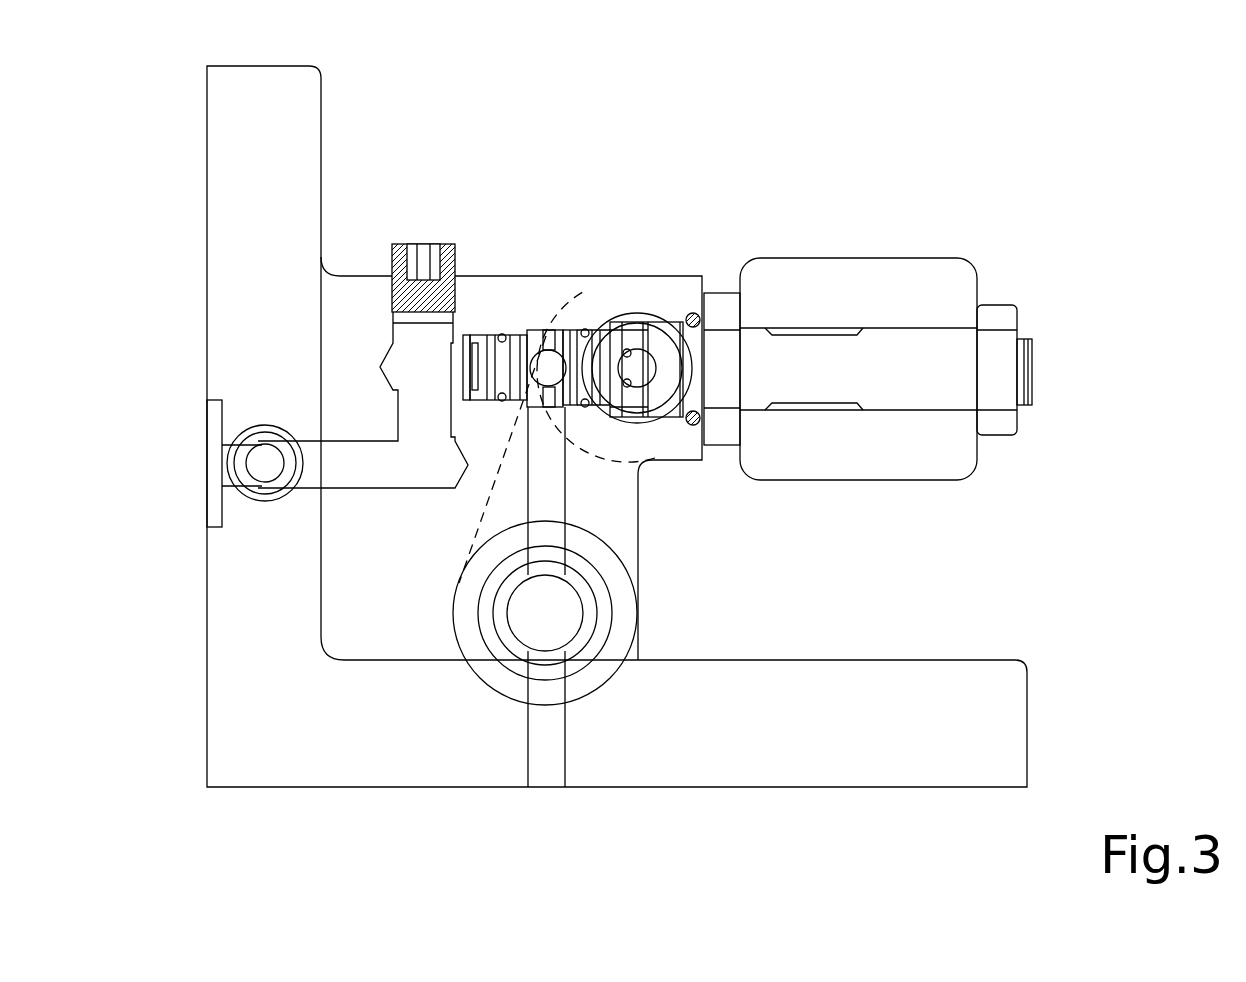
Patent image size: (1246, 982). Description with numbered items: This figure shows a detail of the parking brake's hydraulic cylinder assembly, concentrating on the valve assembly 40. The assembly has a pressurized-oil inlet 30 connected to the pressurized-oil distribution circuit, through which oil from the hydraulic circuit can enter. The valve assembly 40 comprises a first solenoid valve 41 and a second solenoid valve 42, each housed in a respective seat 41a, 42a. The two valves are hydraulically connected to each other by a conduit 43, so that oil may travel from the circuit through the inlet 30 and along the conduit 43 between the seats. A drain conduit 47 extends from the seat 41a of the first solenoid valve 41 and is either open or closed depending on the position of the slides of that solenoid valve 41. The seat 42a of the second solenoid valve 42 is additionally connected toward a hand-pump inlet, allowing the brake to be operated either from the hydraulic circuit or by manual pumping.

The valve assembly 40 is at (860, 527).
The first solenoid valve 41 is at (874, 320).
The seat 41a is at (603, 327).
The pressurized-oil inlet 30 is at (657, 327).
The second solenoid valve 42 is at (554, 626).
The seat 42a is at (580, 608).
The conduit 43 is at (532, 500).
The drain conduit 47 is at (372, 487).